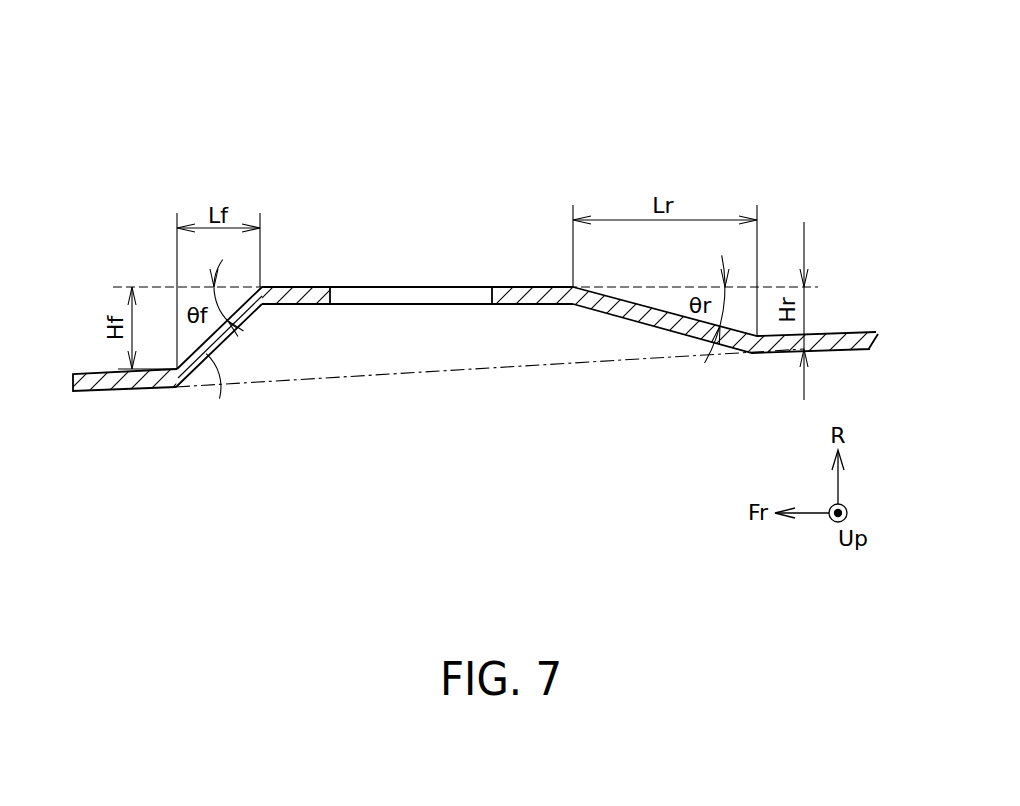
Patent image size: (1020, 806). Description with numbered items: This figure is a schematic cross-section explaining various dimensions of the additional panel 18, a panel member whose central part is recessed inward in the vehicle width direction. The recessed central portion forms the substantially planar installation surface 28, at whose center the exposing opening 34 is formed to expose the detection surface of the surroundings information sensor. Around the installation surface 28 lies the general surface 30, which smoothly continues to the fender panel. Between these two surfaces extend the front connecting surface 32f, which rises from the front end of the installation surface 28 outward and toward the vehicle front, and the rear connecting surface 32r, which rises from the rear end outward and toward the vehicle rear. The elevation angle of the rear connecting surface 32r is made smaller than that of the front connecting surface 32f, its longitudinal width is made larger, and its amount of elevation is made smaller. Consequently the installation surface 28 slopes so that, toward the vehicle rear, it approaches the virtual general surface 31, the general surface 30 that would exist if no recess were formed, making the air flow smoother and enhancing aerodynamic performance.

The additional panel 18 is at (393, 166).
The installation surface 28 is at (305, 287).
The general surface 30 is at (93, 391).
The virtual general surface 31 is at (317, 378).
The front connecting surface 32f is at (212, 363).
The rear connecting surface 32r is at (645, 330).
The exposing opening 34 is at (488, 287).